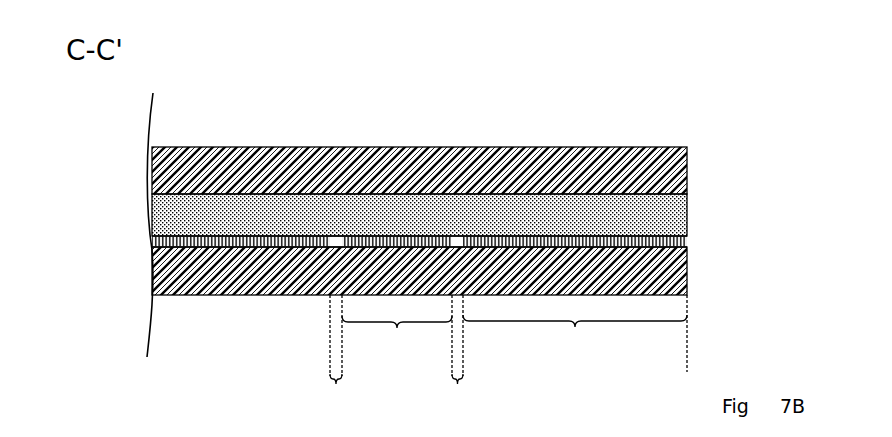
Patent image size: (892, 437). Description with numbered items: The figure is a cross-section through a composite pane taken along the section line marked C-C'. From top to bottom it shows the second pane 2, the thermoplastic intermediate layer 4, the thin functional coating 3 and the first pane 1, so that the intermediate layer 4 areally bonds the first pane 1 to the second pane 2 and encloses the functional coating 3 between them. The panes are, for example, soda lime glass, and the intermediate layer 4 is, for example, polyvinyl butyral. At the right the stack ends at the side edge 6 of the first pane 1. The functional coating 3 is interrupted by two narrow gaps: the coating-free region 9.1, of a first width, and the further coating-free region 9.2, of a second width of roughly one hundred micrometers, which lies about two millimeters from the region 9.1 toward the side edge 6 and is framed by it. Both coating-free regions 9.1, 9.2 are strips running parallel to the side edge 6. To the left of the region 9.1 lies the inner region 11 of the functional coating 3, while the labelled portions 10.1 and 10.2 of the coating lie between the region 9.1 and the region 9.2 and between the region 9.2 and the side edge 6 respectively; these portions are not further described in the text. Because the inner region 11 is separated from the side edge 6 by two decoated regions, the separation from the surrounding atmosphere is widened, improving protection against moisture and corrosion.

The first pane 1 is at (646, 262).
The second pane 2 is at (602, 155).
The functional coating 3 is at (365, 240).
The thermoplastic intermediate layer 4 is at (642, 215).
The side edge 6 is at (697, 292).
The coating-free region 9.1 is at (333, 233).
The coating-free region 9.2 is at (454, 233).
The first segment of thin layer 10.1 is at (403, 240).
The second segment of thin layer 10.2 is at (509, 240).
The inner region 11 is at (262, 237).